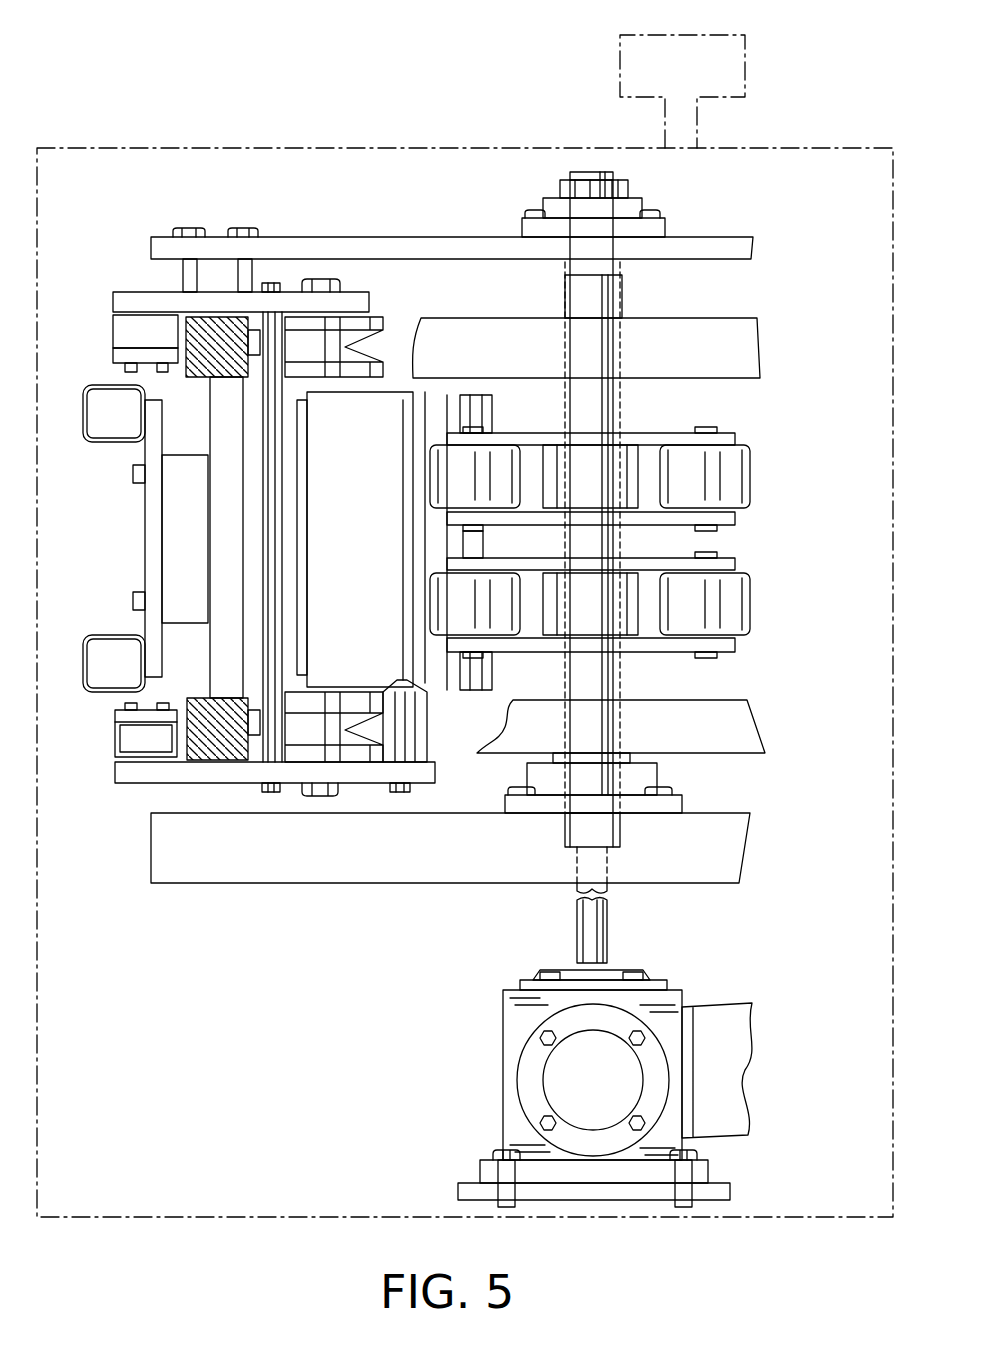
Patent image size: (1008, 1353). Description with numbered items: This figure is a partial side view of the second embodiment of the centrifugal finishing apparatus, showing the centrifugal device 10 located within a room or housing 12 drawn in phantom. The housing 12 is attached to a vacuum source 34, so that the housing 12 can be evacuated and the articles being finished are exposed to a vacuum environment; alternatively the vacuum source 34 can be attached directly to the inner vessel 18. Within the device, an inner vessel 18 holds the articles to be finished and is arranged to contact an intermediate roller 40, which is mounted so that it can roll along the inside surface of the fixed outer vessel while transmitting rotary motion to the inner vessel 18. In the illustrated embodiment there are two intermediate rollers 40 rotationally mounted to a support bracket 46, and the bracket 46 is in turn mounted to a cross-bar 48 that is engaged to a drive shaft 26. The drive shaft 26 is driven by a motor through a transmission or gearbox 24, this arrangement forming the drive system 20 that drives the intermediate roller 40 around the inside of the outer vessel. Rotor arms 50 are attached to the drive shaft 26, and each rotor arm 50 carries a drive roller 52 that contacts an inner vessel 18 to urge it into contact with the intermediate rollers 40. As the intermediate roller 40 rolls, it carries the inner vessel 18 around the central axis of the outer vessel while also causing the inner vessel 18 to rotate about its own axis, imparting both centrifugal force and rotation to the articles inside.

The centrifugal device 10 is at (118, 98).
The housing 12 is at (39, 1030).
The inner vessel 18 is at (372, 484).
The drive system 20 is at (644, 1053).
The gearbox 24 is at (675, 998).
The drive shaft 26 is at (585, 928).
The vacuum source 34 is at (745, 62).
The intermediate roller 40 is at (396, 326).
The support bracket 46 is at (292, 300).
The cross-bar 48 is at (430, 245).
The rotor arm 50 is at (650, 442).
The drive roller 52 is at (485, 475).